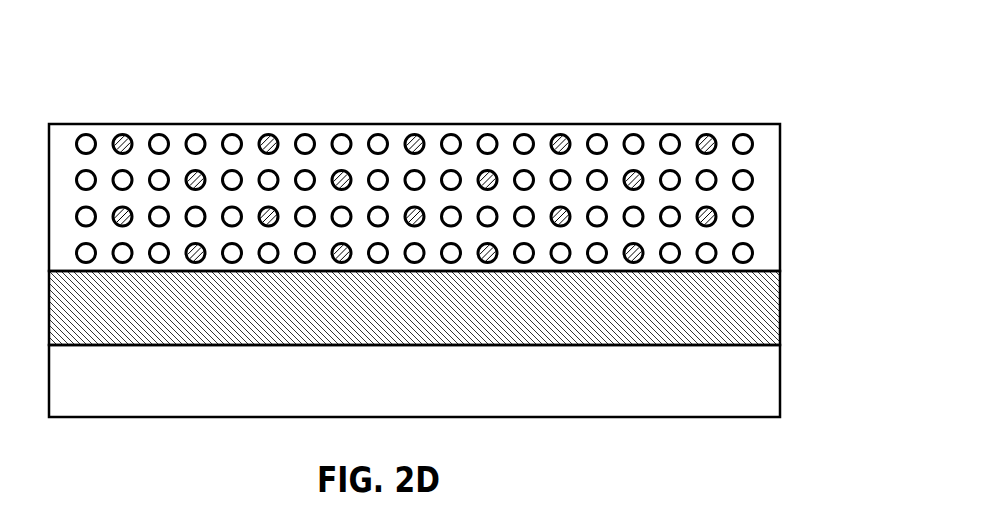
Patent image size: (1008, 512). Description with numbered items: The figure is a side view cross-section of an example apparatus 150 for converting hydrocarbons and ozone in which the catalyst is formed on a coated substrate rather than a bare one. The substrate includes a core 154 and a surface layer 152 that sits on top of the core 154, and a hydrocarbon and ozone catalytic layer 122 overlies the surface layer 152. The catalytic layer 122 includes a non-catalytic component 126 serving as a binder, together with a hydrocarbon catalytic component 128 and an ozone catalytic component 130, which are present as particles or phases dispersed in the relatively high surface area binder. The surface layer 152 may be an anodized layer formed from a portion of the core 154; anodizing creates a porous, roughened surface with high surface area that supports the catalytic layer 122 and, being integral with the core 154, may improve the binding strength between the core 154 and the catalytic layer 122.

The apparatus 150 is at (462, 236).
The hydrocarbon and ozone catalytic layer 122 is at (780, 250).
The non-catalytic component 126 is at (762, 218).
The ozone catalytic component 130 is at (752, 176).
The hydrocarbon catalytic component 128 is at (561, 133).
The surface layer 152 is at (780, 303).
The core 154 is at (780, 378).